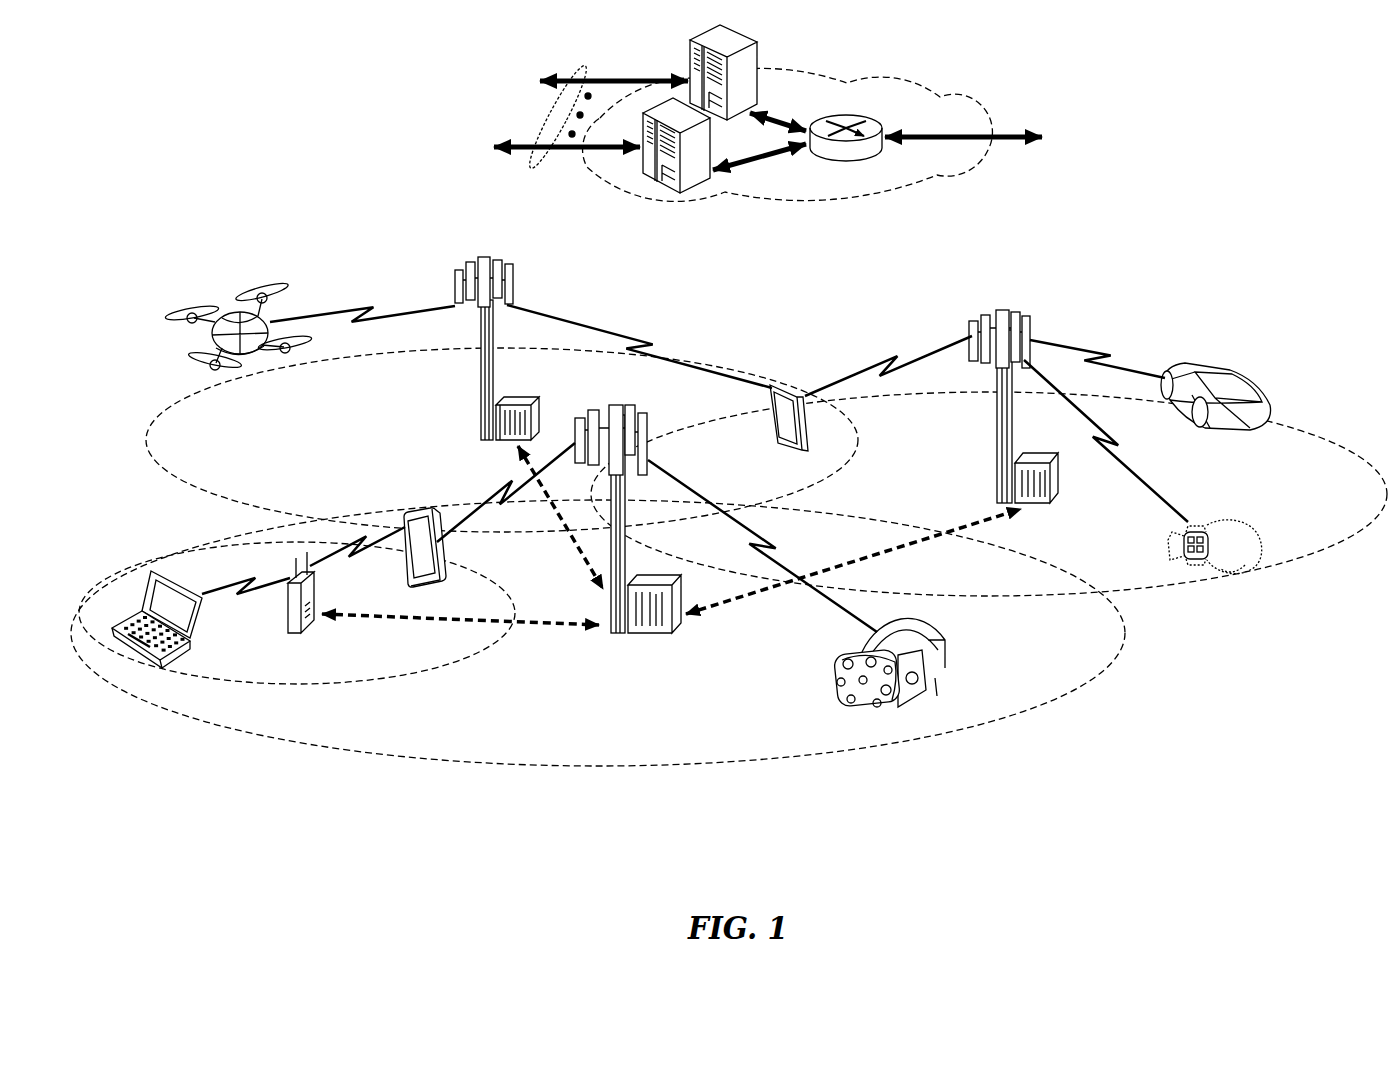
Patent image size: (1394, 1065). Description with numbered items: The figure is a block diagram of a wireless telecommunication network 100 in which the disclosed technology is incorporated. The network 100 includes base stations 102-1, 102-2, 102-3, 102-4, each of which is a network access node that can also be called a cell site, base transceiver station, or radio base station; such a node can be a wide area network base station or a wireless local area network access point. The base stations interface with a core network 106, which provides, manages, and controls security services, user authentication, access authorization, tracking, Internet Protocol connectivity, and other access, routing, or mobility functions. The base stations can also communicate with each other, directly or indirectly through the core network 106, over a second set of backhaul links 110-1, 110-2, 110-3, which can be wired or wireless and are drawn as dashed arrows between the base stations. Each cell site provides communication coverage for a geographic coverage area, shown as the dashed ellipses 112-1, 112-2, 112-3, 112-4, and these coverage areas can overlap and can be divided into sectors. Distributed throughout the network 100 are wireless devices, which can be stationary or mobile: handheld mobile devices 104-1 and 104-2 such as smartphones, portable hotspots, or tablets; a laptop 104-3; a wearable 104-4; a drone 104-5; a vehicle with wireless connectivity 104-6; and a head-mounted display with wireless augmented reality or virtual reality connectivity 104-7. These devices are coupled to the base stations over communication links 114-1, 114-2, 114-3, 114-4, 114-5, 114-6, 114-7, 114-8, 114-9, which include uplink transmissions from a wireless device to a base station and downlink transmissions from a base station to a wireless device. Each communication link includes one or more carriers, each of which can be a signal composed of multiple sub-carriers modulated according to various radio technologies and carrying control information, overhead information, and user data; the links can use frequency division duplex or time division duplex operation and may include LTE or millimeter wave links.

The wireless telecommunication network 100 is at (1288, 125).
The base station 102-1 is at (615, 638).
The base station 102-2 is at (478, 388).
The base station 102-3 is at (997, 420).
The base station 102-4 is at (287, 622).
The handheld mobile device 104-1 is at (442, 563).
The handheld mobile device 104-2 is at (766, 423).
The laptop 104-3 is at (135, 655).
The wearable 104-4 is at (1203, 525).
The drone 104-5 is at (250, 356).
The vehicle with wireless connectivity 104-6 is at (1232, 371).
The head-mounted display with wireless AR/VR connectivity 104-7 is at (950, 653).
The core network 106 is at (878, 205).
The backhaul link 110-1 is at (372, 620).
The backhaul link 110-2 is at (920, 553).
The backhaul link 110-3 is at (577, 543).
The geographic coverage area 112-1 is at (545, 767).
The geographic coverage area 112-2 is at (425, 676).
The geographic coverage area 112-3 is at (210, 497).
The geographic coverage area 112-4 is at (1291, 422).
The communication link 114-1 is at (773, 545).
The communication link 114-2 is at (503, 494).
The communication link 114-3 is at (216, 593).
The communication link 114-4 is at (360, 553).
The communication link 114-5 is at (368, 306).
The communication link 114-6 is at (648, 345).
The communication link 114-7 is at (893, 365).
The communication link 114-8 is at (1125, 462).
The communication link 114-9 is at (1093, 352).